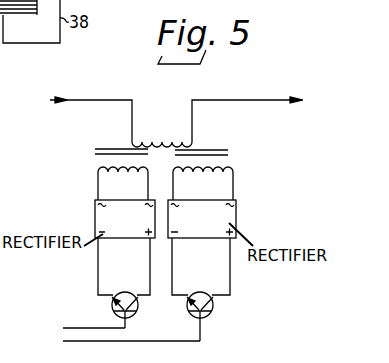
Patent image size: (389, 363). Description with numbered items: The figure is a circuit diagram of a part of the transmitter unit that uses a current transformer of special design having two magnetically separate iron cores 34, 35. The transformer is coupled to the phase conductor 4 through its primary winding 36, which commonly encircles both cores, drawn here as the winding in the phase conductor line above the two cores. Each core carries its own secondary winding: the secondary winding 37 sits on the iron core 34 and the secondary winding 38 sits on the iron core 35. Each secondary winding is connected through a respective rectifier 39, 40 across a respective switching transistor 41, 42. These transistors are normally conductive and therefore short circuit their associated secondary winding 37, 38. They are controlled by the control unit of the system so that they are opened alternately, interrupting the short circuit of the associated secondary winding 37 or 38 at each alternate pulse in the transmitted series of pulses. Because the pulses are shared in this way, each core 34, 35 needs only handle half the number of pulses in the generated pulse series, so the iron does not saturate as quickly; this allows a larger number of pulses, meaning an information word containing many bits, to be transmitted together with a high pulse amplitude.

The phase conductor 4 is at (80, 98).
The iron core 34 is at (95, 152).
The iron core 35 is at (229, 155).
The primary winding 36 is at (165, 131).
The secondary winding 37 is at (100, 172).
The secondary winding 38 is at (222, 176).
The rectifier 39 is at (95, 221).
The rectifier 40 is at (237, 223).
The switching transistor 41 is at (112, 302).
The switching transistor 42 is at (213, 306).